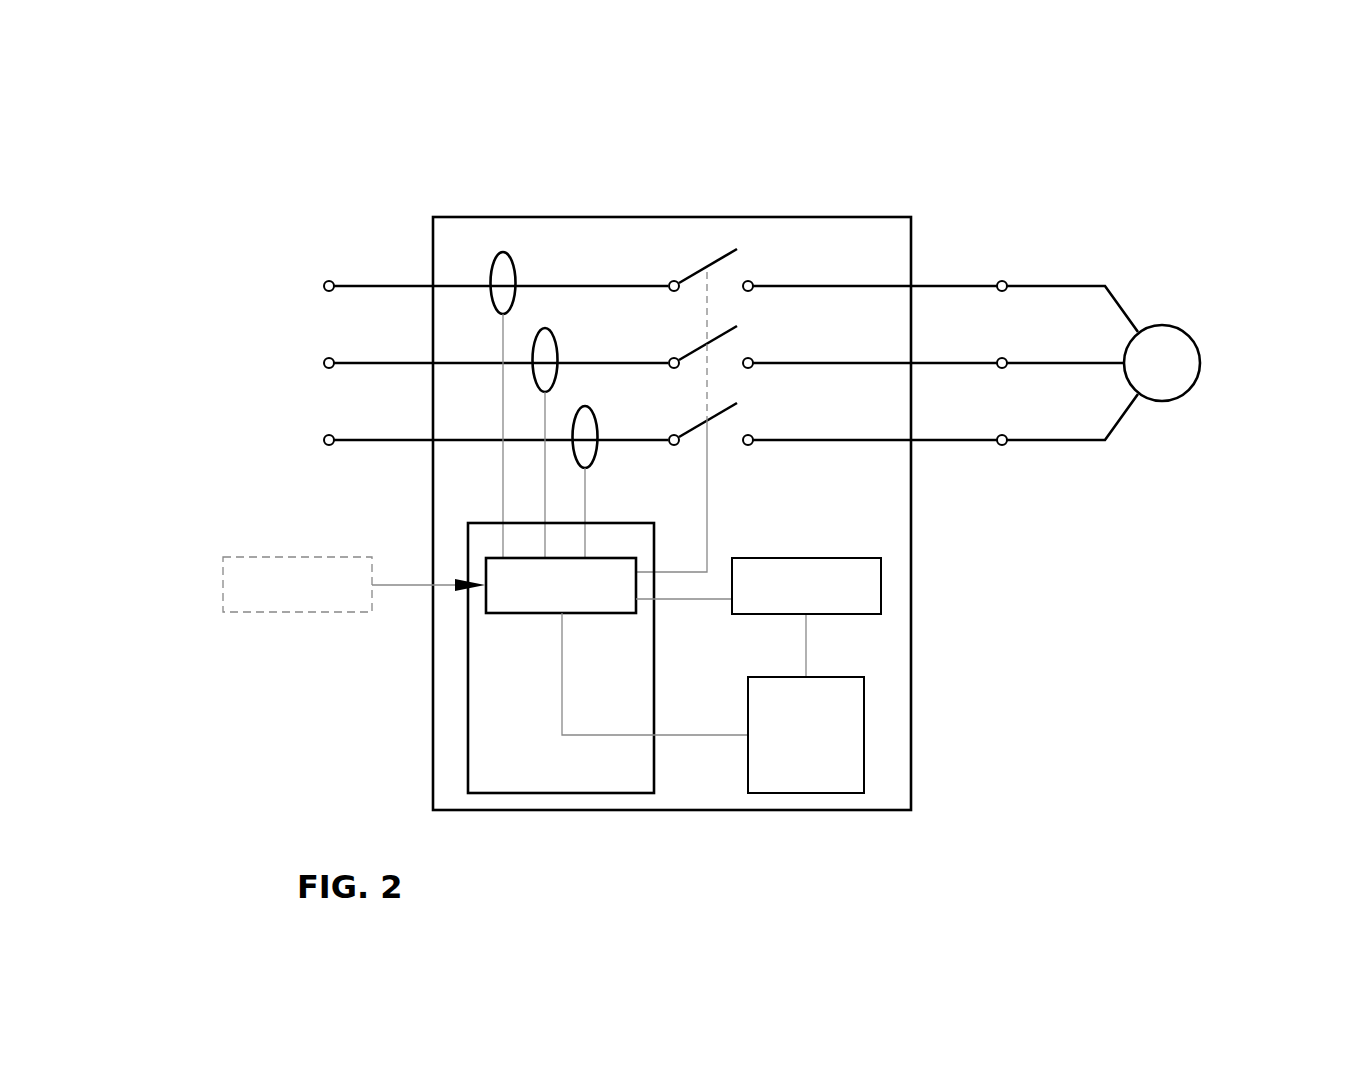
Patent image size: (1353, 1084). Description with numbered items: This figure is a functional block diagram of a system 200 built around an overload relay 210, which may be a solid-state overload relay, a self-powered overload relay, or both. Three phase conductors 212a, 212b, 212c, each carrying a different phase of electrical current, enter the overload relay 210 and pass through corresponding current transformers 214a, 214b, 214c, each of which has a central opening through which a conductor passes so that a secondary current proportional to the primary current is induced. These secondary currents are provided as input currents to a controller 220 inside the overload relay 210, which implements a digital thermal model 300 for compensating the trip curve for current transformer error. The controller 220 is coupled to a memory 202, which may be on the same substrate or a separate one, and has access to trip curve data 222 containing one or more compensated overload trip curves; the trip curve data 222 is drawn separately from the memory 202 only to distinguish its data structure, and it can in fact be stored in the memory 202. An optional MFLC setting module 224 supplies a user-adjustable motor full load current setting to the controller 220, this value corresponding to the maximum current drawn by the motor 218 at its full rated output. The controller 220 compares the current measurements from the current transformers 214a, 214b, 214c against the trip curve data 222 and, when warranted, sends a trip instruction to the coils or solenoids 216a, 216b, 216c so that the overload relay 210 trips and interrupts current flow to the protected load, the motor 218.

The system 200 is at (1087, 128).
The memory 202 is at (881, 567).
The overload relay 210 is at (450, 217).
The phase conductor 212a is at (325, 281).
The phase conductor 212b is at (325, 358).
The phase conductor 212c is at (325, 435).
The current transformer 214a is at (513, 265).
The current transformer 214b is at (554, 342).
The current transformer 214c is at (595, 420).
The coil or solenoid 216a is at (737, 249).
The coil or solenoid 216b is at (737, 326).
The coil or solenoid 216c is at (737, 403).
The motor 218 is at (1181, 324).
The controller 220 is at (510, 629).
The trip curve data 222 is at (773, 793).
The MFLC setting module 224 is at (240, 557).
The thermal model 300 is at (537, 602).